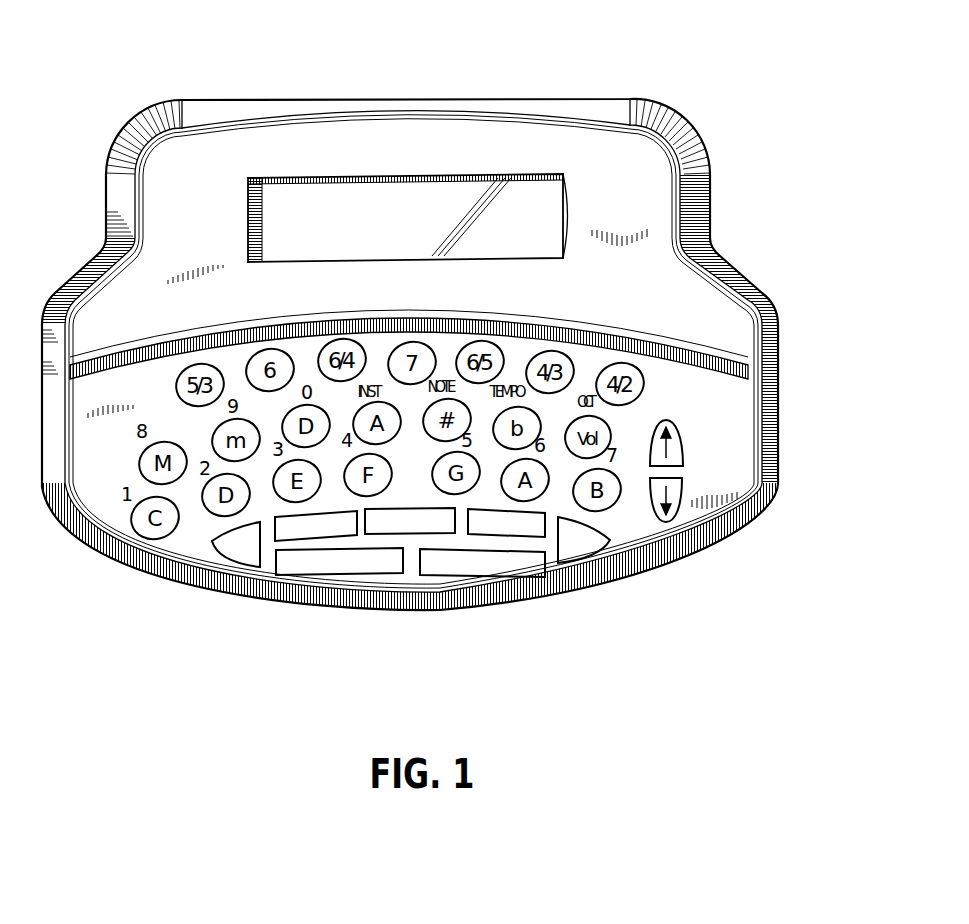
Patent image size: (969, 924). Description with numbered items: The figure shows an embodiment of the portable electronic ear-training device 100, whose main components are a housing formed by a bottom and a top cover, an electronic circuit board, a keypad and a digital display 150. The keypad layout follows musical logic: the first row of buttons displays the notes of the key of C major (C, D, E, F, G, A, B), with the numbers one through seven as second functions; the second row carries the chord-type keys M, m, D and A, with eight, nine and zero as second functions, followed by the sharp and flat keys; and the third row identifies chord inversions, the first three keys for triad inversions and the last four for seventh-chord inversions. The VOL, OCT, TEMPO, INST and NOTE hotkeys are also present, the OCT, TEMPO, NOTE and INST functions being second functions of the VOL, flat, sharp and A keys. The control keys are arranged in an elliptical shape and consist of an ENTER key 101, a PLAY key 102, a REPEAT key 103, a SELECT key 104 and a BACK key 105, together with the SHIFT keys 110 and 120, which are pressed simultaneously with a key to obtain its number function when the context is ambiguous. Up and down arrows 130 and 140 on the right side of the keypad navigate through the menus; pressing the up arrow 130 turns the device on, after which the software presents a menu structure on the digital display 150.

The portable electronic ear-training device 100 is at (486, 95).
The digital display 150 is at (378, 207).
The up arrow 130 is at (673, 435).
The down arrow 140 is at (672, 494).
The PLAY key 102 is at (212, 545).
The REPEAT key 103 is at (288, 528).
The SELECT key 104 is at (412, 532).
The BACK key 105 is at (523, 522).
The SHIFT key 110 is at (368, 568).
The SHIFT key 120 is at (528, 565).
The ENTER key 101 is at (600, 547).